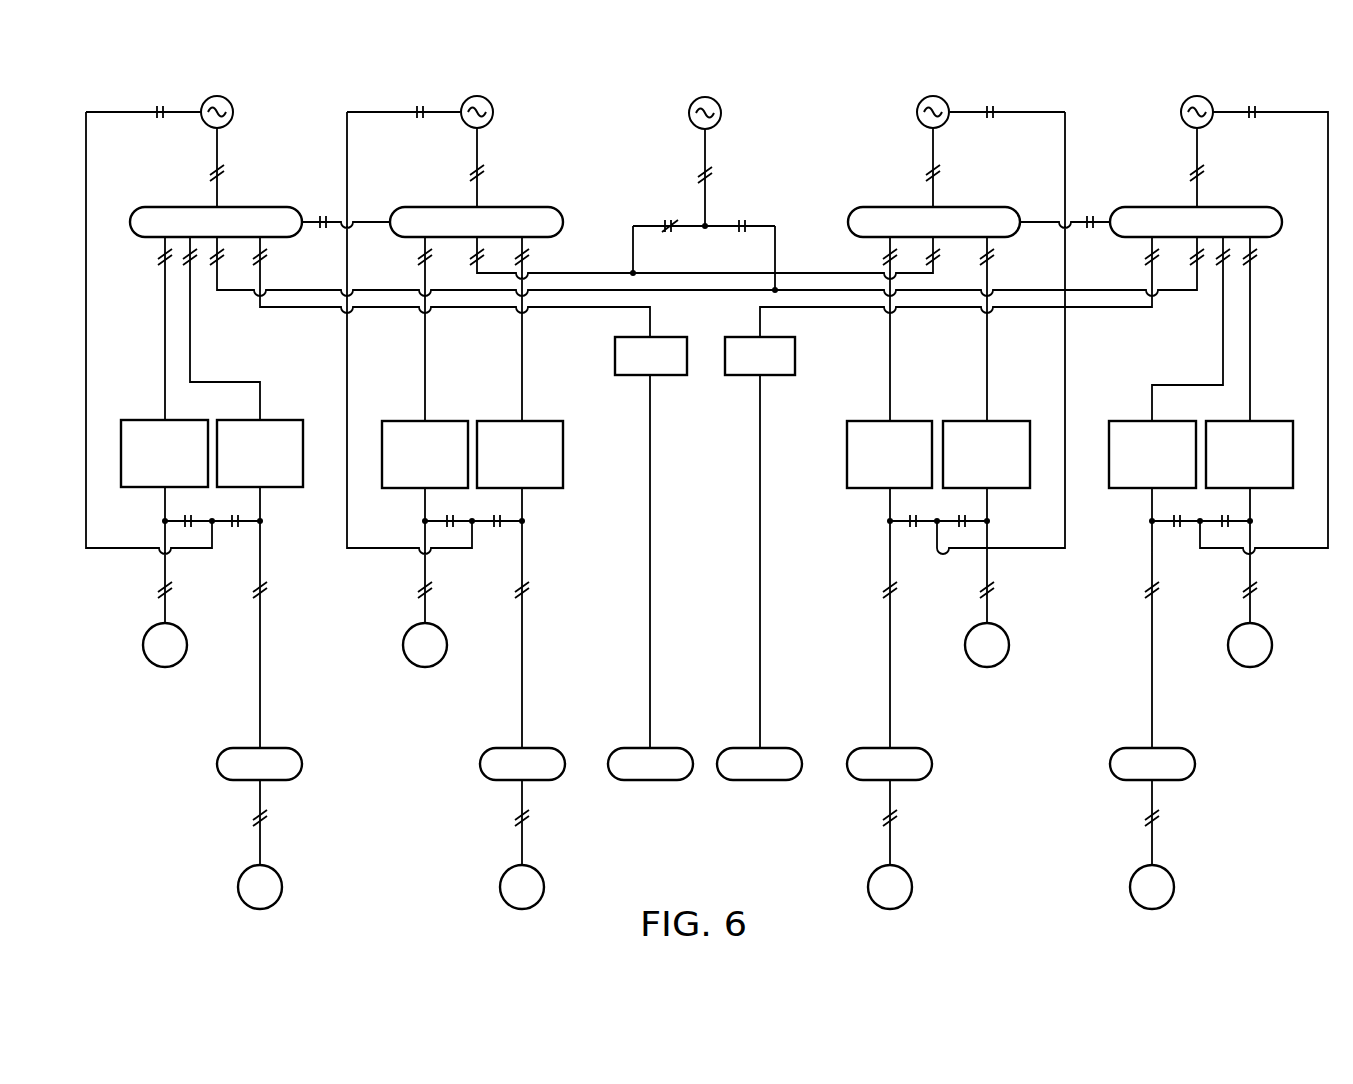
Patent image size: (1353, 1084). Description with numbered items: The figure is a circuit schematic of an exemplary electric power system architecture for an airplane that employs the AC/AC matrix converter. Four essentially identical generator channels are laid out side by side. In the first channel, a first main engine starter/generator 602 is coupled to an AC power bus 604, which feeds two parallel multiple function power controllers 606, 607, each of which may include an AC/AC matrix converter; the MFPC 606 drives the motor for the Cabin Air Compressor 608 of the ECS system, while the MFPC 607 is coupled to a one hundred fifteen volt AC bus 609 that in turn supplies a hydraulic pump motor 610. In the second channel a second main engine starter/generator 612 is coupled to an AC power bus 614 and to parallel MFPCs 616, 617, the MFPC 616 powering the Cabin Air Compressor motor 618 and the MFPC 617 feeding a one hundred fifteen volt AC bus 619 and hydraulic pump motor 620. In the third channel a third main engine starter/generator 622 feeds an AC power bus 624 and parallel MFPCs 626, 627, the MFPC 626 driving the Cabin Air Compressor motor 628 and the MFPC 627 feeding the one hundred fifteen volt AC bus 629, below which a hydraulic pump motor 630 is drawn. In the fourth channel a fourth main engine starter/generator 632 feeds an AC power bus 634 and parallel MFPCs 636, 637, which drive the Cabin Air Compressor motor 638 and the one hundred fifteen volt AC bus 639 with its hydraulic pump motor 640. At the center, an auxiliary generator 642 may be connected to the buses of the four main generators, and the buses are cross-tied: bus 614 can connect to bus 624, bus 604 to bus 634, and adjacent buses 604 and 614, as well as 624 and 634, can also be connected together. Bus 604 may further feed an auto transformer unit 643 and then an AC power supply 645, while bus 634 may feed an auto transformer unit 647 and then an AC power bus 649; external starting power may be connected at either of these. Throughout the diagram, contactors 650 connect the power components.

The first main engine starter/generator 602 is at (233, 113).
The AC power bus 604 is at (162, 207).
The multiple function power controller 606 is at (138, 420).
The multiple function power controller 607 is at (290, 420).
The Cabin Air Compressor motor 608 is at (165, 667).
The 115 volt AC bus 609 is at (217, 762).
The hydraulic pump motor 610 is at (238, 888).
The second main engine starter/generator 612 is at (493, 113).
The AC power bus 614 is at (422, 207).
The multiple function power controller 616 is at (398, 420).
The multiple function power controller 617 is at (550, 420).
The Cabin Air Compressor motor 618 is at (425, 667).
The 115 volt AC bus 619 is at (480, 762).
The hydraulic pump motor 620 is at (500, 888).
The third main engine starter/generator 622 is at (917, 113).
The AC power bus 624 is at (888, 207).
The multiple function power controller 626 is at (862, 420).
The multiple function power controller 627 is at (1012, 420).
The Cabin Air Compressor motor 628 is at (987, 667).
The 115 volt AC bus 629 is at (932, 764).
The hydraulic pump motor 630 is at (912, 888).
The fourth main engine starter/generator 632 is at (1180, 113).
The AC power bus 634 is at (1145, 207).
The multiple function power controller 636 is at (1122, 420).
The multiple function power controller 637 is at (1275, 420).
The Cabin Air Compressor motor 638 is at (1250, 667).
The 115 volt AC bus 639 is at (1195, 764).
The hydraulic pump motor 640 is at (1174, 888).
The auxiliary generator 642 is at (721, 113).
The auto transformer unit 643 is at (633, 375).
The AC power supply 645 is at (650, 782).
The auto transformer unit 647 is at (743, 375).
The AC power bus 649 is at (760, 782).
The contactors 650 is at (166, 100).